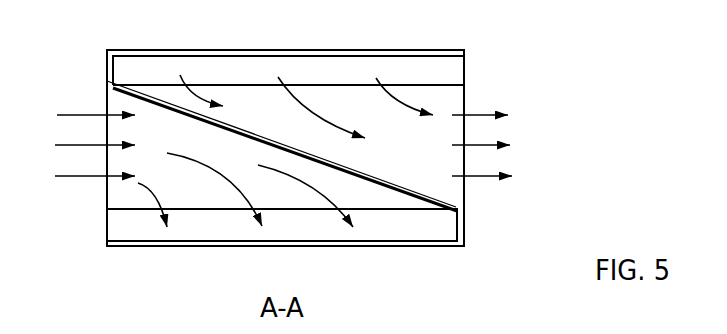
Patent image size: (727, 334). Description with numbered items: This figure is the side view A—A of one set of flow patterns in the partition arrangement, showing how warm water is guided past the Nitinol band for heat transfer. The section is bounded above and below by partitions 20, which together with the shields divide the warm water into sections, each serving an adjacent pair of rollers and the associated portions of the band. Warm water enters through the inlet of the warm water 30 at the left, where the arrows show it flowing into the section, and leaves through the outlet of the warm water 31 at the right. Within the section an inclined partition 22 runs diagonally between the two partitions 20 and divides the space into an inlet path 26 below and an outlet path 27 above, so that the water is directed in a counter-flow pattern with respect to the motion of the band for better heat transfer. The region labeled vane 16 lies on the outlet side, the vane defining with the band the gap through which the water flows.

The vane 16 is at (402, 132).
The partition 20 is at (252, 50).
The inclined partition 22 is at (363, 172).
The inlet path 26 is at (245, 190).
The outlet path 27 is at (306, 106).
The inlet of the warm water 30 is at (81, 145).
The outlet of the warm water 31 is at (497, 145).